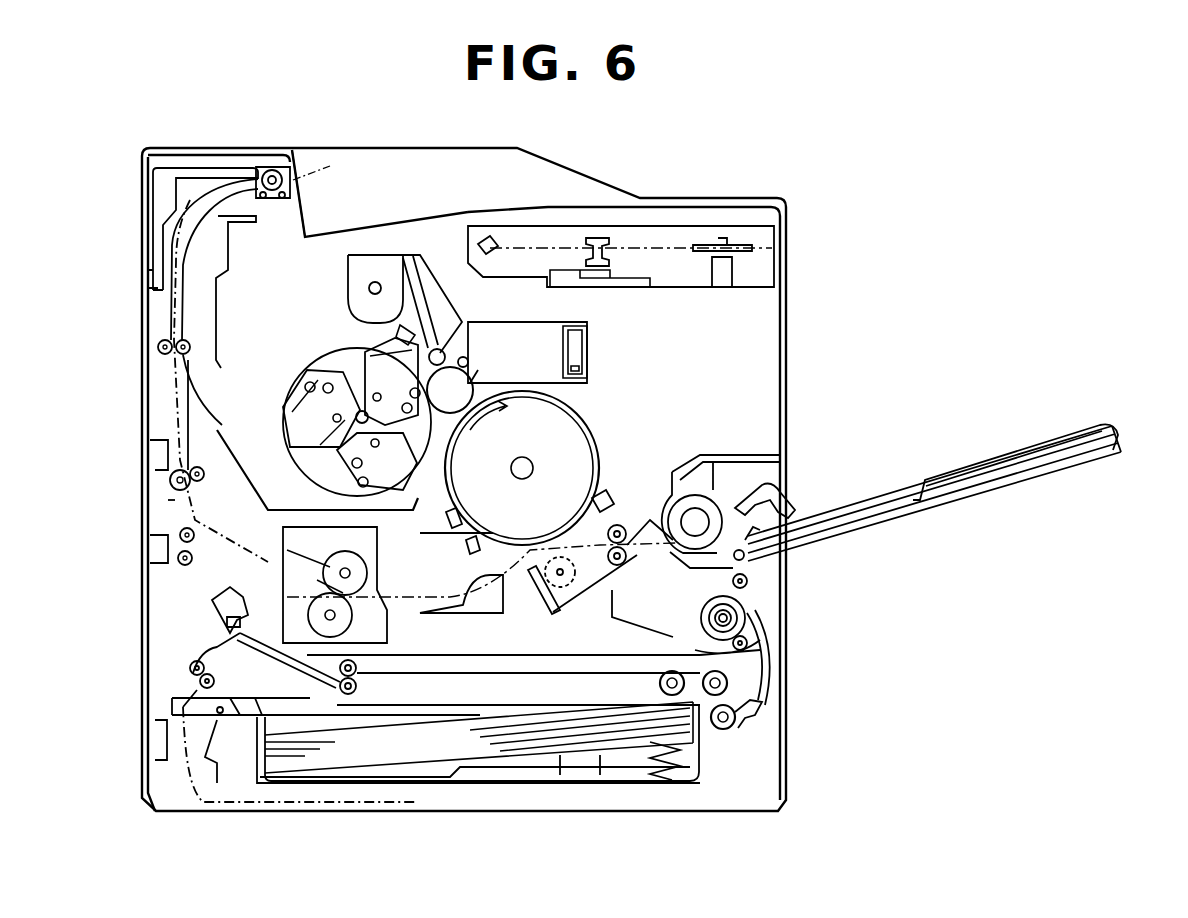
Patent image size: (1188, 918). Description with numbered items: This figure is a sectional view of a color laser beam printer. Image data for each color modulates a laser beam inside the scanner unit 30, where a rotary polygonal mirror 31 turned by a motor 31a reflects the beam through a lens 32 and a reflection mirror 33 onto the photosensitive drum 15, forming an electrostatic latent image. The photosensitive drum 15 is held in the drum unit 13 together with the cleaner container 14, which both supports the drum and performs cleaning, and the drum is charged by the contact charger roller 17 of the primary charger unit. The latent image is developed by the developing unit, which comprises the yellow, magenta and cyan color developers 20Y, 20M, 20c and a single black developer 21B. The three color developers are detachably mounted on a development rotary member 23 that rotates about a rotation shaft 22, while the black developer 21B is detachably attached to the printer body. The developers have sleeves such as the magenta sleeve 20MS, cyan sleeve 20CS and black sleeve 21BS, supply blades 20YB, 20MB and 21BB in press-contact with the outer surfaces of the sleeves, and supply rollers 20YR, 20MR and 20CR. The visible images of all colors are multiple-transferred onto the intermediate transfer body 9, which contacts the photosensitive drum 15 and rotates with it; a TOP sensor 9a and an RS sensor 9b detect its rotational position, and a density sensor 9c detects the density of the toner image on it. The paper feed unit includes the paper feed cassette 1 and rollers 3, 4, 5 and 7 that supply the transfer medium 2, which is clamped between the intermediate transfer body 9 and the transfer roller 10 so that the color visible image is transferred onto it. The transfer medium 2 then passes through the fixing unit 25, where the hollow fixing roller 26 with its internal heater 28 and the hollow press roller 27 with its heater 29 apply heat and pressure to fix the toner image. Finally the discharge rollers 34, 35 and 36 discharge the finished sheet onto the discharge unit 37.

The paper feed cassette 1 is at (632, 790).
The transfer medium 2 is at (545, 735).
The roller 3 is at (660, 686).
The roller 4 is at (710, 671).
The roller 5 is at (728, 730).
The roller 7 is at (701, 614).
The intermediate transfer body 9 is at (571, 436).
The TOP sensor 9a is at (470, 548).
The RS sensor 9b is at (604, 498).
The density sensor 9c is at (462, 575).
The transfer roller 10 is at (553, 593).
The drum unit 13 is at (528, 340).
The cleaner container 14 is at (593, 352).
The photosensitive drum 15 is at (476, 386).
The contact charger roller 17 is at (467, 358).
The yellow color developer 20Y is at (360, 345).
The yellow supply blade 20YB is at (362, 352).
The yellow supply roller 20YR is at (372, 392).
The magenta color developer 20M is at (290, 420).
The magenta sleeve 20MS is at (408, 390).
The magenta supply roller 20MR is at (400, 405).
The magenta supply blade 20MB is at (305, 390).
The cyan color developer 20c is at (340, 468).
The cyan sleeve 20CS is at (357, 470).
The cyan supply roller 20CR is at (365, 488).
The black developer 21B is at (363, 262).
The black sleeve 21BS is at (403, 258).
The black supply blade 21BB is at (441, 345).
The rotation shaft 22 is at (300, 452).
The development rotary member 23 is at (292, 442).
The fixing unit 25 is at (362, 550).
The fixing roller 26 is at (362, 580).
The press roller 27 is at (385, 636).
The heater 28 is at (262, 527).
The heater 29 is at (250, 628).
The scanner unit 30 is at (641, 226).
The rotary polygonal mirror 31 is at (729, 232).
The motor 31a is at (722, 289).
The lens 32 is at (598, 237).
The reflection mirror 33 is at (488, 236).
The discharge roller 34 is at (170, 482).
The discharge roller 35 is at (158, 347).
The discharge roller 36 is at (273, 165).
The discharge unit 37 is at (311, 162).